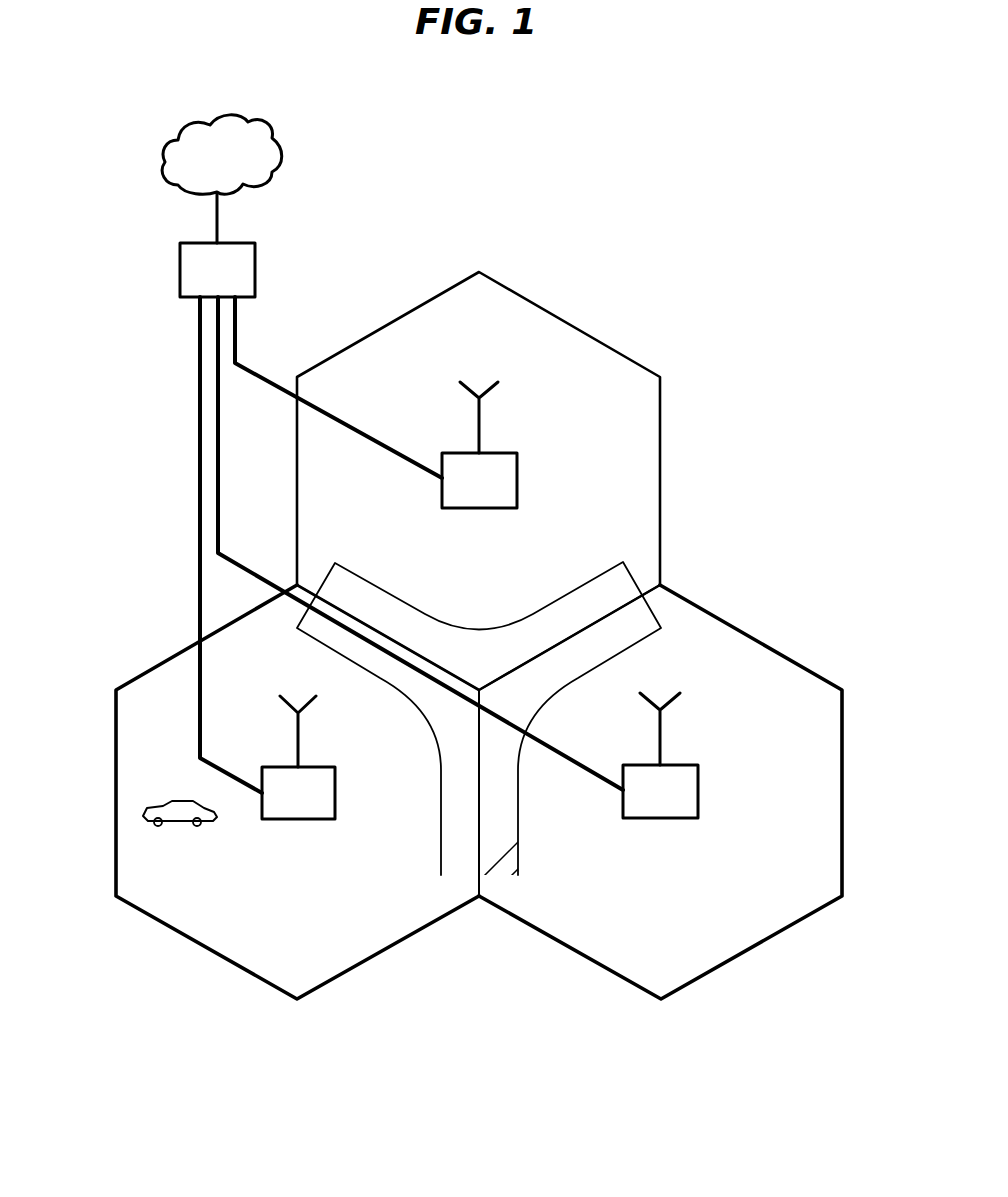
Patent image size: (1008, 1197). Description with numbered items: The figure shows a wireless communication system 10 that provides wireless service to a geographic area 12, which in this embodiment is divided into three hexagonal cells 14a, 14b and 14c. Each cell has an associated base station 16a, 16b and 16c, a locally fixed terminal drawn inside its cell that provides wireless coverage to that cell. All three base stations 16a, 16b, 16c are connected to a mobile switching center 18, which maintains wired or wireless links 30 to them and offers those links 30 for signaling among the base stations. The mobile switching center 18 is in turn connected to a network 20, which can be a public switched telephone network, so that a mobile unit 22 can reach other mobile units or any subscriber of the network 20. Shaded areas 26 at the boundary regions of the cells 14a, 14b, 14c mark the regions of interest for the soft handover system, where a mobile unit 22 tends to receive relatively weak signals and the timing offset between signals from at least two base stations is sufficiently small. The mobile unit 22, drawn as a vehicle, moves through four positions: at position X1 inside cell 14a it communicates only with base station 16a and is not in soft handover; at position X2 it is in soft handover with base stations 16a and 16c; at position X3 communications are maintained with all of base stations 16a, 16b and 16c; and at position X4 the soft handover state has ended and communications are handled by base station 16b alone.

The wireless communication system 10 is at (776, 271).
The geographic area 12 is at (478, 635).
The cell 14a is at (116, 745).
The cell 14b is at (660, 402).
The cell 14c is at (842, 718).
The base station 16a is at (298, 820).
The base station 16b is at (517, 482).
The base station 16c is at (698, 797).
The mobile switching center 18 is at (180, 265).
The network 20 is at (162, 148).
The mobile unit 22 is at (182, 830).
The shaded areas 26 is at (388, 592).
The links 30 is at (200, 318).
The position X1 is at (365, 795).
The position X2 is at (460, 795).
The position X3 is at (480, 653).
The position X4 is at (523, 550).